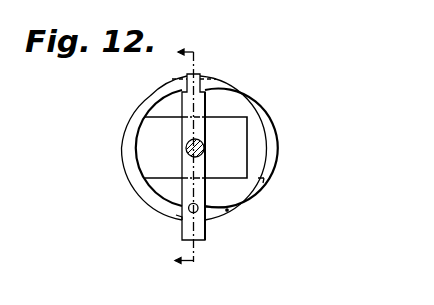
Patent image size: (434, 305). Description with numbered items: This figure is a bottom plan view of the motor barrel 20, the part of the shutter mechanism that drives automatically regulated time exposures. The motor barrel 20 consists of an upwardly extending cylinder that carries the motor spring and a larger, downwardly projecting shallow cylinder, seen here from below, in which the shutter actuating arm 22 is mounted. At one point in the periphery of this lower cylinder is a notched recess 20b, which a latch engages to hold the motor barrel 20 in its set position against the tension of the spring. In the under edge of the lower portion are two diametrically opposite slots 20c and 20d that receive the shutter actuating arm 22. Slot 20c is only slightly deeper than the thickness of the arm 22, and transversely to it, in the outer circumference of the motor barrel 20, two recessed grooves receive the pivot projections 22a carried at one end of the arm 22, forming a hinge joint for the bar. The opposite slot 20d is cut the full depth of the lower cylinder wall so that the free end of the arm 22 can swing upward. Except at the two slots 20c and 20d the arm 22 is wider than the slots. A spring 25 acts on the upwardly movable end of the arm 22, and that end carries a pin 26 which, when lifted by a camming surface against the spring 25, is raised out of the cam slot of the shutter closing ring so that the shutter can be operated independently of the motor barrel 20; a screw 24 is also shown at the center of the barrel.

The motor barrel 20 is at (256, 110).
The notched recess 20b is at (264, 180).
The slot 20c is at (186, 79).
The slot 20d is at (182, 218).
The shutter actuating arm 22 is at (200, 235).
The pivot projections 22a is at (230, 67).
The screw 24 is at (205, 147).
The spring 25 is at (153, 162).
The pin 26 is at (228, 211).